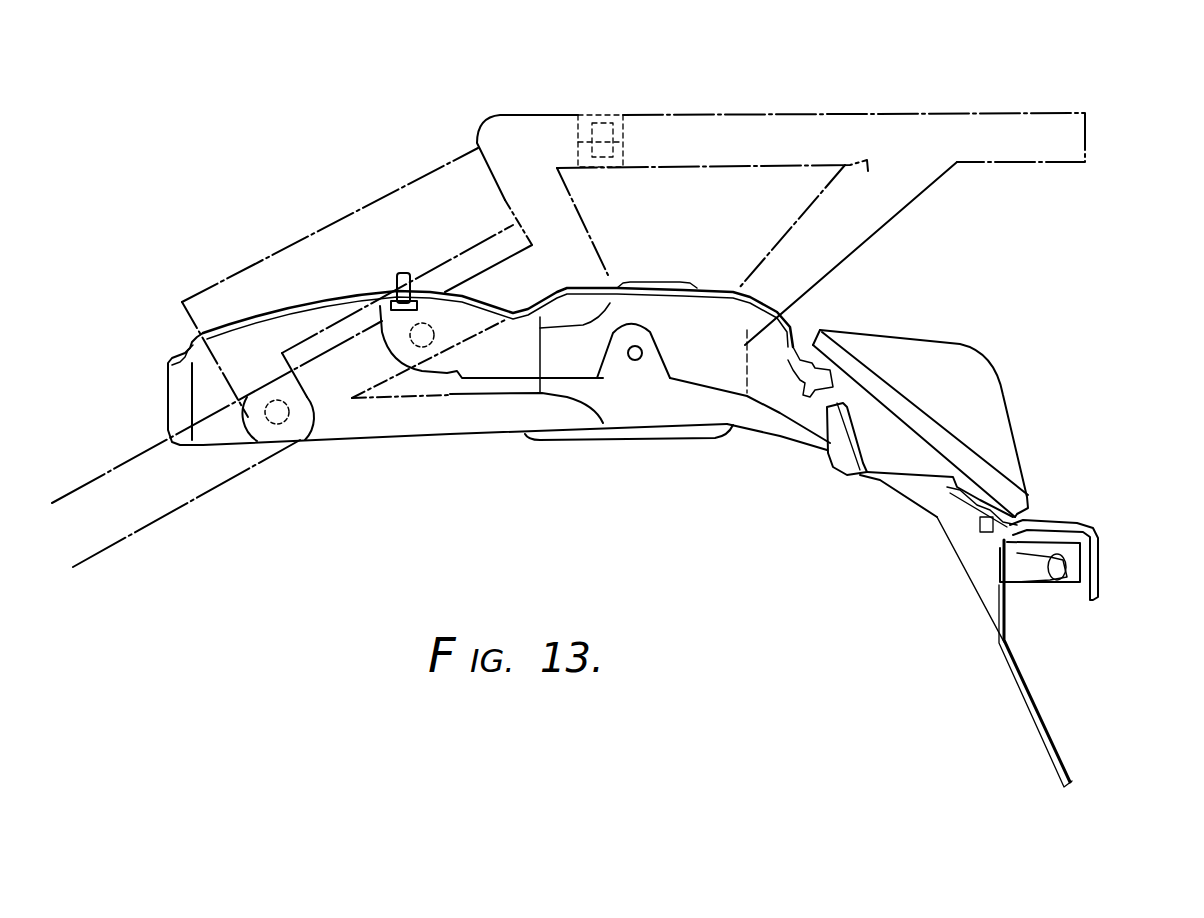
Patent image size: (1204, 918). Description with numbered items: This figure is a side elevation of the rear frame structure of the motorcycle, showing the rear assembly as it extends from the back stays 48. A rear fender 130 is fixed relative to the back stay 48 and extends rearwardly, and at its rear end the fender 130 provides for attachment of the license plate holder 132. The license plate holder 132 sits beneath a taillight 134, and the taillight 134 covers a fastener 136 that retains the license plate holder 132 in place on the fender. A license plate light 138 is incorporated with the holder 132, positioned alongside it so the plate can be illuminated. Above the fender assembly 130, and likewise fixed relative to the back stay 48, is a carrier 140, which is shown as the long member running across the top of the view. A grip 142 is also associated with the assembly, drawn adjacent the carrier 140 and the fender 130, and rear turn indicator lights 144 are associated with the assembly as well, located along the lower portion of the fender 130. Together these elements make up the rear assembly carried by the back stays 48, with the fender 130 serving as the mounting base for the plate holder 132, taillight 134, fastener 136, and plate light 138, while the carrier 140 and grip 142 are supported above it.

The back stays 48 is at (158, 514).
The rear fender 130 is at (683, 291).
The license plate holder 132 is at (1048, 722).
The taillight 134 is at (1003, 397).
The fastener 136 is at (990, 532).
The license plate light 138 is at (1100, 550).
The carrier 140 is at (703, 115).
The grip 142 is at (367, 205).
The rear turn indicator lights 144 is at (667, 437).